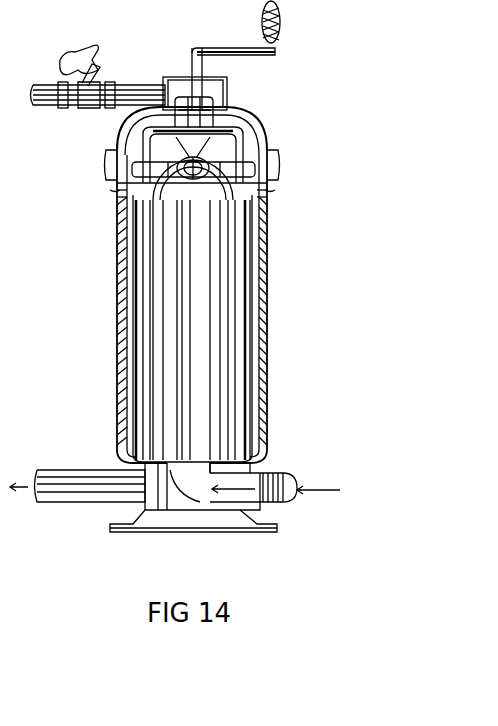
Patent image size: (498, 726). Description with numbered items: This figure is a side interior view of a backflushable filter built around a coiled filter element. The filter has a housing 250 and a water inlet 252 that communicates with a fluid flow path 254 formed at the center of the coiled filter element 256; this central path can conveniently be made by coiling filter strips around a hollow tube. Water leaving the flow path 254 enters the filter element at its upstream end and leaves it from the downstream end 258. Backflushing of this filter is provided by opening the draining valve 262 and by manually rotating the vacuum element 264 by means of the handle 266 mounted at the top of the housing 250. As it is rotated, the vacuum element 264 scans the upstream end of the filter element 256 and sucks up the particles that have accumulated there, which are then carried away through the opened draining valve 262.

The housing 250 is at (267, 280).
The water inlet 252 is at (285, 473).
The fluid flow path 254 is at (120, 205).
The coiled filter element 256 is at (265, 195).
The downstream end 258 is at (50, 503).
The draining valve 262 is at (97, 70).
The vacuum element 264 is at (245, 110).
The handle 266 is at (281, 22).